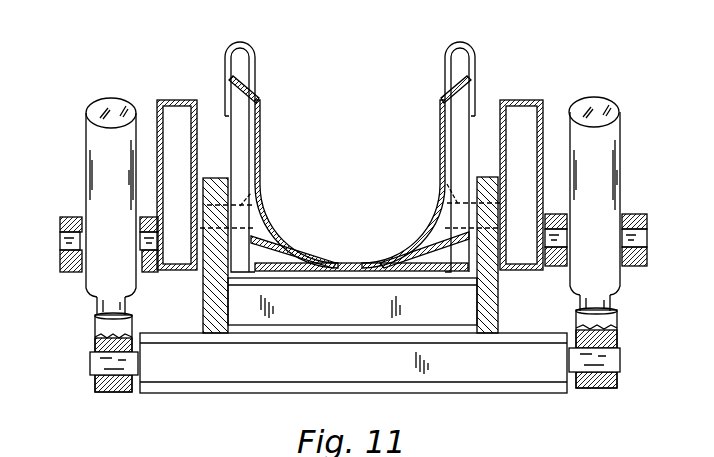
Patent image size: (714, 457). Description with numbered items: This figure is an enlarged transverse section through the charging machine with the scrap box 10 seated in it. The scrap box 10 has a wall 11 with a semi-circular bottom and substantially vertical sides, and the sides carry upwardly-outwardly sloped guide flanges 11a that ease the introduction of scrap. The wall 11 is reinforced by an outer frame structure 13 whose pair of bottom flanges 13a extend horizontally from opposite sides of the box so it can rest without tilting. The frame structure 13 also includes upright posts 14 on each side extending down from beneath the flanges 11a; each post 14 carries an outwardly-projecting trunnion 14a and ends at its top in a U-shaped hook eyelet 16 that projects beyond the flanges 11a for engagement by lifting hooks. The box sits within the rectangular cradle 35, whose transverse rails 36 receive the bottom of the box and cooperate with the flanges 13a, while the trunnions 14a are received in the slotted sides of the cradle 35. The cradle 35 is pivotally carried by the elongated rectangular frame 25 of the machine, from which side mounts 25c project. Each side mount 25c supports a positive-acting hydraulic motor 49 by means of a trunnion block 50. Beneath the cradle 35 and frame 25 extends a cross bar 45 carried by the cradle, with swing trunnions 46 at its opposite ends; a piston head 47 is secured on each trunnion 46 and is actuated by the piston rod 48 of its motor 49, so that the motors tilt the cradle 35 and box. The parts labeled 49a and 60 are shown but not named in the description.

The scrap box 10 is at (369, 236).
The wall 11 is at (278, 236).
The guide flanges 11a is at (245, 83).
The outer frame structure 13 is at (430, 243).
The bottom flanges 13a is at (421, 272).
The upright posts 14 is at (250, 128).
The trunnions 14a is at (266, 193).
The hook eyelet 16 is at (252, 47).
The frame 25 is at (182, 98).
The side mounts 25c is at (63, 258).
The cradle 35 is at (218, 178).
The transverse rails 36 is at (345, 321).
The bar 45 is at (517, 393).
The swing trunnions 46 is at (92, 366).
The piston head 47 is at (100, 391).
The piston rod 48 is at (96, 306).
The hydraulic motor 49 is at (85, 126).
The cylinder flange 49a is at (48, 228).
The trunnion block 50 is at (647, 218).
The member 60 is at (230, 456).